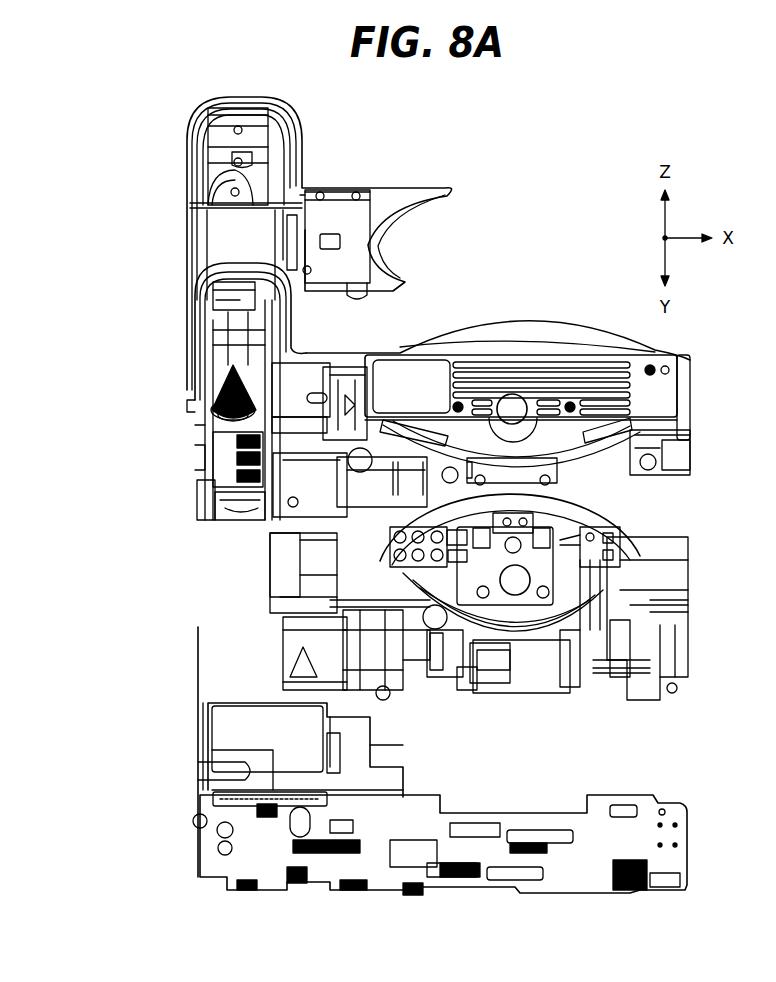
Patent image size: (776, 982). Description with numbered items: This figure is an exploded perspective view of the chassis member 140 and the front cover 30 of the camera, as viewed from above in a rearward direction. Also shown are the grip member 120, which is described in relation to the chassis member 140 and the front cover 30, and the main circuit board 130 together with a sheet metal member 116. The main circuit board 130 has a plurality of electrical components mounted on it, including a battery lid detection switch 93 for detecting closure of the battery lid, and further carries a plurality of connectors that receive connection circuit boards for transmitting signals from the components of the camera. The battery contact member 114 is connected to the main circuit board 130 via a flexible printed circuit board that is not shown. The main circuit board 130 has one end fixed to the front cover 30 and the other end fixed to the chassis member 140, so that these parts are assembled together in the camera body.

The grip member 120 is at (195, 213).
The battery contact member 114 is at (212, 470).
The front cover 30 is at (688, 378).
The chassis member 140 is at (683, 621).
The sheet metal member 116 is at (232, 734).
The battery lid detection switch 93 is at (266, 820).
The main circuit board 130 is at (222, 870).